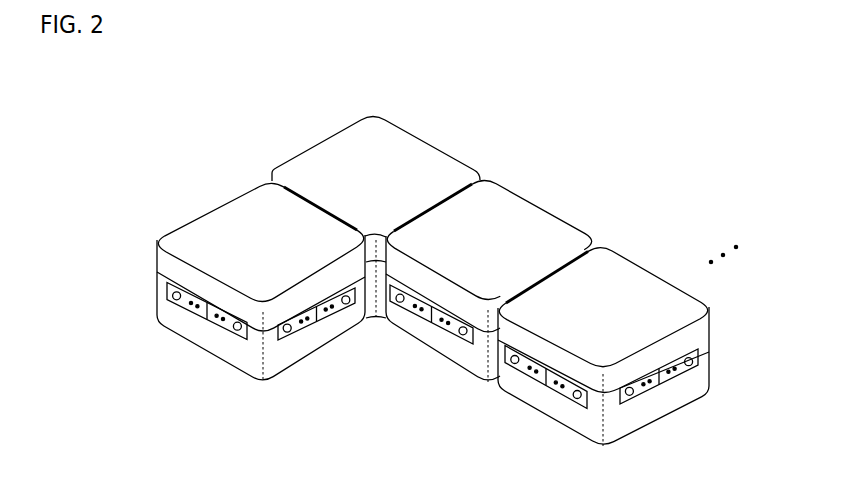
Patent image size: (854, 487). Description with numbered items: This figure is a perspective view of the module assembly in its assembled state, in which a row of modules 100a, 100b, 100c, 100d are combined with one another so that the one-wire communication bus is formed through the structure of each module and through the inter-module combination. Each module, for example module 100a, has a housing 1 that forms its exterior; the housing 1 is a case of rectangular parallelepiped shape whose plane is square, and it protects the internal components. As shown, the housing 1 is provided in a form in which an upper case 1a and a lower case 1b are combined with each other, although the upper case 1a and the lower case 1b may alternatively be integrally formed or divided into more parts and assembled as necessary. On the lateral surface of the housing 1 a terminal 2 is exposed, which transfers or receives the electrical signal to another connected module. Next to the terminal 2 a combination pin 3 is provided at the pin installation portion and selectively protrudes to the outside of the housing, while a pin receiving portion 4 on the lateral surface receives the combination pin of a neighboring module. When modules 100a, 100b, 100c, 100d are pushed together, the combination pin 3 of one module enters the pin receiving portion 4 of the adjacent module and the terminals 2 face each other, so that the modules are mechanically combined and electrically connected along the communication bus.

The module 100a is at (210, 215).
The module 100b is at (406, 125).
The module 100c is at (501, 193).
The module 100d is at (619, 263).
The housing 1 is at (83, 261).
The upper case 1a is at (168, 266).
The lower case 1b is at (229, 331).
The terminal 2 is at (318, 325).
The combination pin 3 is at (286, 348).
The pin receiving portion 4 is at (348, 322).